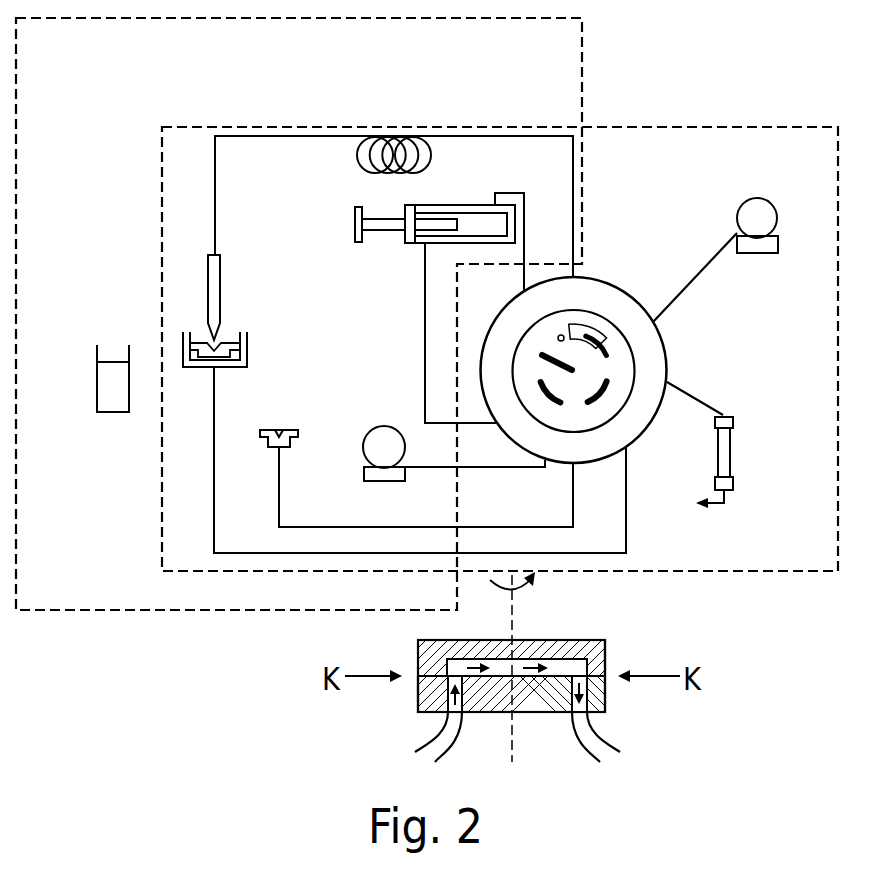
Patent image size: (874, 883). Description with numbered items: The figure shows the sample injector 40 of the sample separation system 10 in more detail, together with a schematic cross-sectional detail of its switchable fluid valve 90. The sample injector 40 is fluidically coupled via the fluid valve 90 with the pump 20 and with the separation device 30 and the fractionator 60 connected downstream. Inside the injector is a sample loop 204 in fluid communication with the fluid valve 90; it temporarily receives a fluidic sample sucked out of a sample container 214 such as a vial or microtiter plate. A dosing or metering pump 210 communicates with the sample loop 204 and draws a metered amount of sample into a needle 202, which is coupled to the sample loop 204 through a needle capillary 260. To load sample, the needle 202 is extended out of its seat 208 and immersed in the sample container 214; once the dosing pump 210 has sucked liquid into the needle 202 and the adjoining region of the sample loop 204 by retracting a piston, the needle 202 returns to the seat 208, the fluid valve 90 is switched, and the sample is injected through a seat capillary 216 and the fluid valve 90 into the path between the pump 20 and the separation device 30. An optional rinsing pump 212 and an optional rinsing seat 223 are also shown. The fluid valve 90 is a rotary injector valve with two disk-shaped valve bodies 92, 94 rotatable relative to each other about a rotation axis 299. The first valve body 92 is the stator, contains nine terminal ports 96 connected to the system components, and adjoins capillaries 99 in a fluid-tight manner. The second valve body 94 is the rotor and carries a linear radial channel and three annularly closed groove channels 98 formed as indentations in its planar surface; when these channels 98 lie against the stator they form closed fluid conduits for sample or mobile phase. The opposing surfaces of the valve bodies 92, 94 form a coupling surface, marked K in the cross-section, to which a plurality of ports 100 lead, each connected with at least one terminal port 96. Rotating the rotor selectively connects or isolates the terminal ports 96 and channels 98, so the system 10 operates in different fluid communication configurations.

The sample separation system 10 is at (668, 108).
The pump 20 is at (753, 212).
The separation device 30 is at (731, 450).
The sample injector 40 is at (582, 72).
The fractionator 60 is at (717, 505).
The fluid valve 90 is at (608, 281).
The first valve body 92 is at (425, 692).
The second valve body 94 is at (425, 668).
The terminal ports 96 is at (578, 466).
The channels 98 is at (605, 332).
The capillaries 99 is at (416, 750).
The ports 100 is at (590, 403).
The needle 202 is at (223, 300).
The sample loop 204 is at (359, 157).
The seat 208 is at (200, 342).
The dosing or metering pump 210 is at (384, 233).
The rinsing pump 212 is at (384, 440).
The sample container 214 is at (97, 356).
The seat capillary 216 is at (250, 555).
The rinsing seat 223 is at (297, 446).
The needle capillary 260 is at (268, 134).
The rotation axis 299 is at (515, 613).